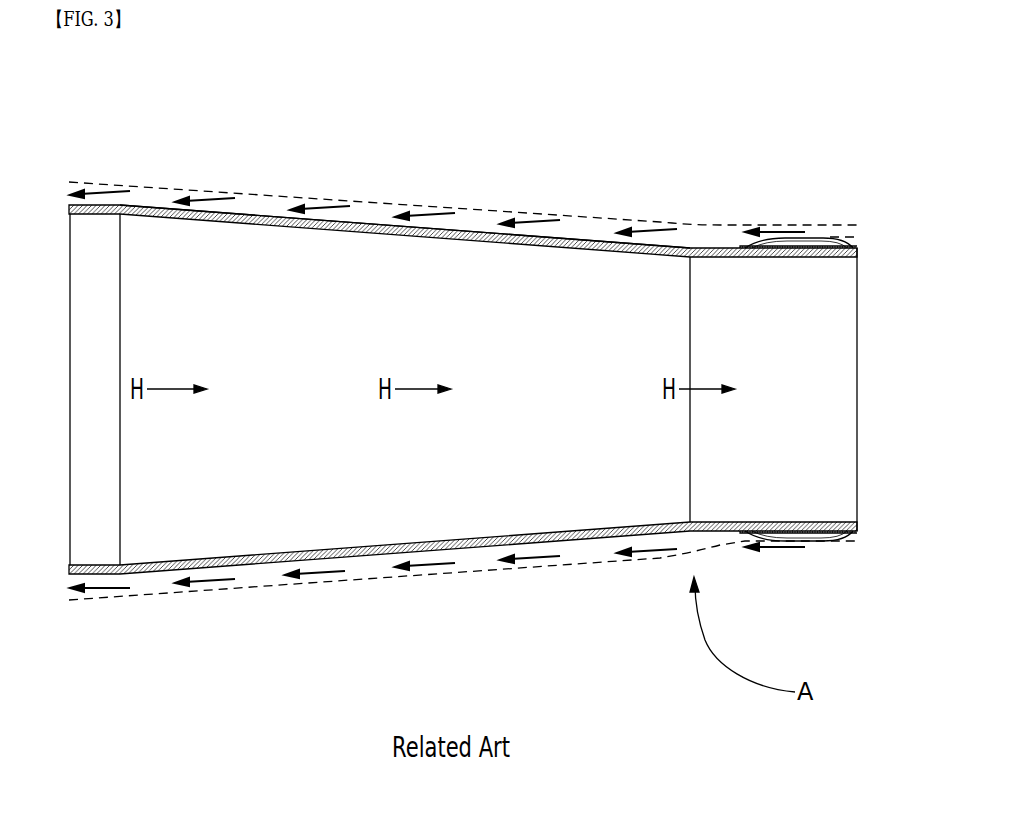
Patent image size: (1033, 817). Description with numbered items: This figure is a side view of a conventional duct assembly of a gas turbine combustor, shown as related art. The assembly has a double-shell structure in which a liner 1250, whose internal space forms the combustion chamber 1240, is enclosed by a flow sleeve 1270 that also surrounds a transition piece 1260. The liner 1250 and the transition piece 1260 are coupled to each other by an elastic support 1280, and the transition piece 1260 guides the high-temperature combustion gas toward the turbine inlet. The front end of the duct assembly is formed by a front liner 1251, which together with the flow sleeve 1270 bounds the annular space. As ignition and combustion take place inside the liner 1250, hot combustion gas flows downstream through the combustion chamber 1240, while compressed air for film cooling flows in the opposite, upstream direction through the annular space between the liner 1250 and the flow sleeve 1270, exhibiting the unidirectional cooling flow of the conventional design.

The combustion chamber 1240 is at (263, 285).
The liner 1250 is at (380, 210).
The front liner 1251 is at (480, 232).
The transition piece 1260 is at (835, 238).
The flow sleeve 1270 is at (738, 222).
The elastic support 1280 is at (823, 541).